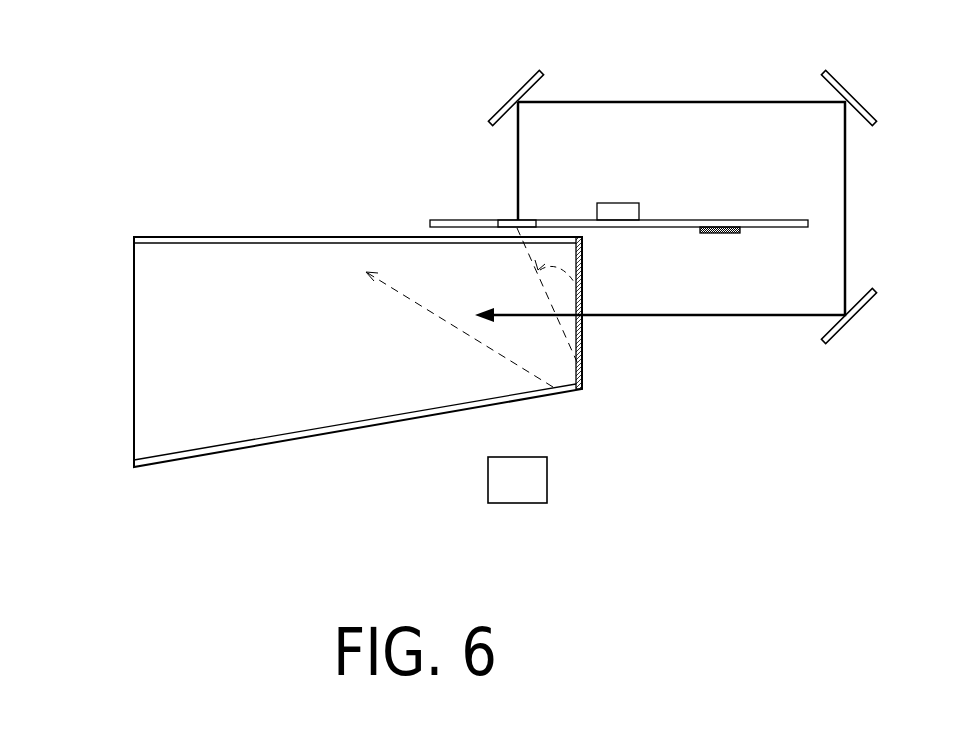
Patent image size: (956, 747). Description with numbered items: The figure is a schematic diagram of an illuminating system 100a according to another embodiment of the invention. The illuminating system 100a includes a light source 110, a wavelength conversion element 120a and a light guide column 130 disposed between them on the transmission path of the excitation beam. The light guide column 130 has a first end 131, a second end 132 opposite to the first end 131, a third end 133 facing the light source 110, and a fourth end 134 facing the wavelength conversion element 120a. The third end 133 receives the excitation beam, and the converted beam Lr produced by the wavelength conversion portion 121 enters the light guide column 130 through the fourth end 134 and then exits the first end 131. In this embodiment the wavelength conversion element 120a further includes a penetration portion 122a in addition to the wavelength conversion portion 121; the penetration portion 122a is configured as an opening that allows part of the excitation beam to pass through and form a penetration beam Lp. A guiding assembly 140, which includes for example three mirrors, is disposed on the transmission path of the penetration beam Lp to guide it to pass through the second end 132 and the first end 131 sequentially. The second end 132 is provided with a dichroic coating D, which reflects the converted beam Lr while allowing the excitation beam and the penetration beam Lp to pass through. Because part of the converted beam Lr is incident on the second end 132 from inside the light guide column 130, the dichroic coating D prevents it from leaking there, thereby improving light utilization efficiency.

The illuminating system 100a is at (82, 68).
The light source 110 is at (530, 480).
The wavelength conversion element 120a is at (702, 208).
The wavelength conversion portion 121 is at (728, 234).
The penetration portion 122a is at (500, 221).
The light guide column 130 is at (146, 222).
The first end 131 is at (133, 352).
The second end 132 is at (578, 337).
The third end 133 is at (386, 418).
The fourth end 134 is at (369, 250).
The guiding assembly 140 is at (521, 82).
The penetration beam Lp is at (650, 100).
The converted beam Lr is at (585, 281).
The dichroic coating D is at (583, 378).